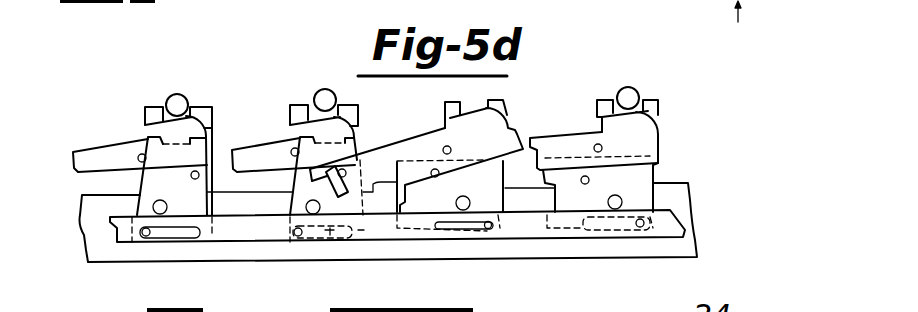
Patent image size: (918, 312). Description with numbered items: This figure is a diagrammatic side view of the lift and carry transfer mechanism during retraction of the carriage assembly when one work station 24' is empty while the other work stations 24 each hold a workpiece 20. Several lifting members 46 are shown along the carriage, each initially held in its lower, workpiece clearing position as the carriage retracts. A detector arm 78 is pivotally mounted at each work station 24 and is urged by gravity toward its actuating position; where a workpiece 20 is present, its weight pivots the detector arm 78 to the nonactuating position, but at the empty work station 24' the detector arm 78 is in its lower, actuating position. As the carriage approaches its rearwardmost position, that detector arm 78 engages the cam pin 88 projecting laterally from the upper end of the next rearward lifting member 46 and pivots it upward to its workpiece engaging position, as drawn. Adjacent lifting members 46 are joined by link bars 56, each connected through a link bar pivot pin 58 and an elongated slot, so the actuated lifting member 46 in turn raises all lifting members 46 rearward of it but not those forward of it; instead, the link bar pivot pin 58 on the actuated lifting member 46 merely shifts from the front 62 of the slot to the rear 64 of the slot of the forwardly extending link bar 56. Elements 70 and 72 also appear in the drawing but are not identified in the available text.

The workpiece 20 is at (177, 98).
The work station 24 is at (406, 112).
The empty work station 24' is at (484, 117).
The detector arm 78 is at (262, 146).
The lifting member 46 is at (303, 193).
The link bar 56 is at (232, 228).
The link bar pivot pin 58 is at (313, 247).
The rear of the slot 64 is at (300, 234).
The nut 70 is at (318, 233).
The front of the slot 62 is at (362, 233).
The cam pin 88 is at (347, 177).
The fastener 72 is at (541, 305).